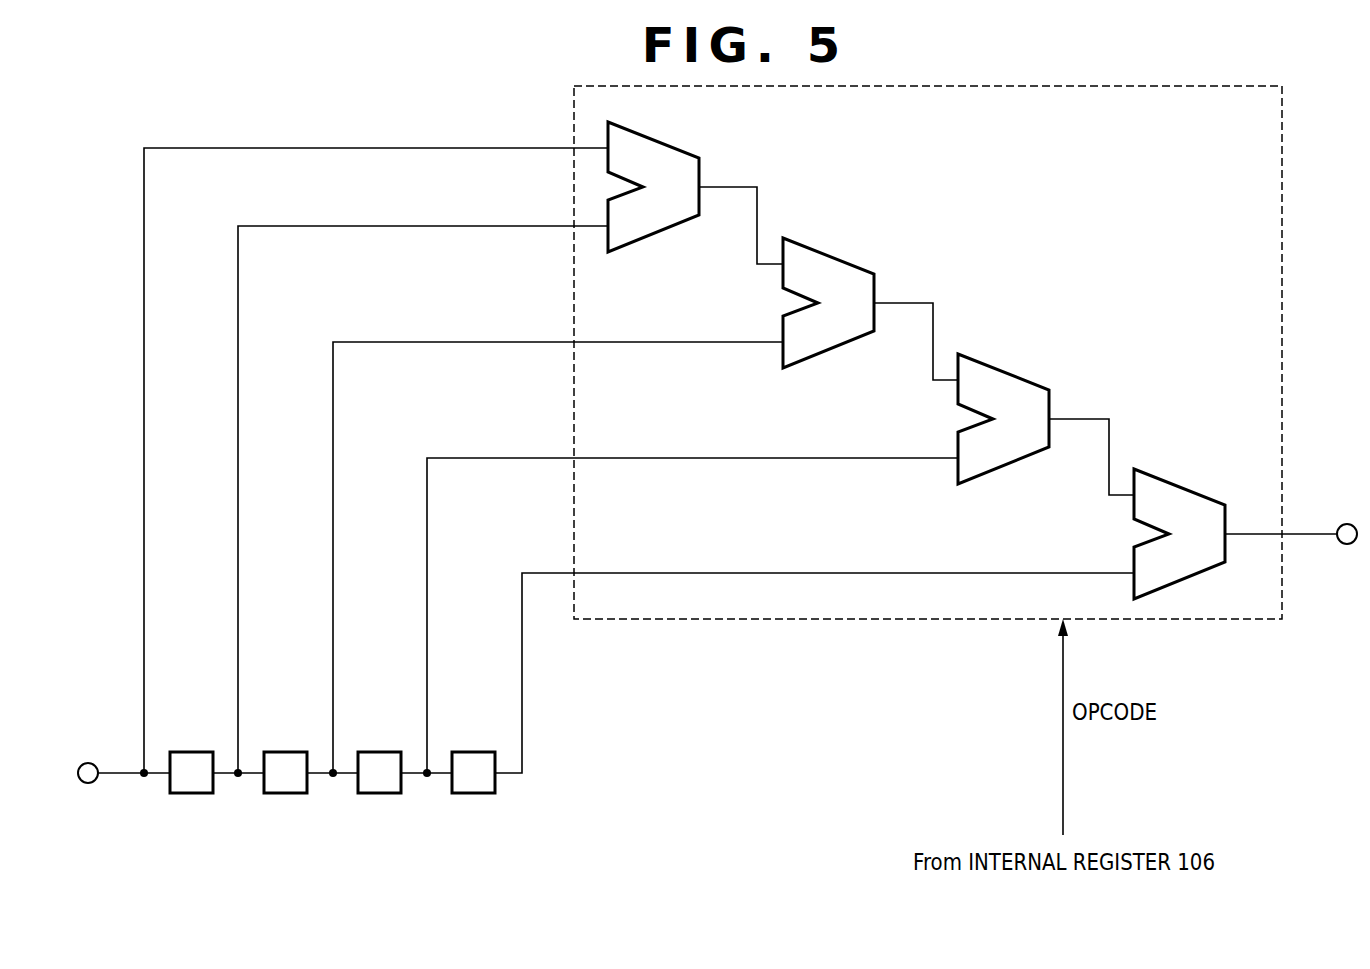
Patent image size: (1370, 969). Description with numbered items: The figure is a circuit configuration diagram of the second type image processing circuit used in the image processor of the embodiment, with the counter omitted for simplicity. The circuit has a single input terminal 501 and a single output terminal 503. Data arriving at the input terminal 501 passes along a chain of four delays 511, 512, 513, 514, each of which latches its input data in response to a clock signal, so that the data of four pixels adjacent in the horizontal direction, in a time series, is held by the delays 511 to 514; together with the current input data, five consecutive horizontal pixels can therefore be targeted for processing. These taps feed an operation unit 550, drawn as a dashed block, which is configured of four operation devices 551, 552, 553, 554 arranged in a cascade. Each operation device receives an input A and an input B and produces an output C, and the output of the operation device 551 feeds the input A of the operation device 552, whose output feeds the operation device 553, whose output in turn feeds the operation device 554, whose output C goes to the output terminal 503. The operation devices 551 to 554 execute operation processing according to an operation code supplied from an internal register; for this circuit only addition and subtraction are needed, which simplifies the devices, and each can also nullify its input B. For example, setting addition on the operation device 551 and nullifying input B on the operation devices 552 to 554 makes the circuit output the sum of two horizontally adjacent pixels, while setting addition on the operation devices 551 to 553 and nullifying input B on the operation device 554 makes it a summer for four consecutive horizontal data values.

The input terminal 501 is at (88, 784).
The output terminal 503 is at (1347, 545).
The delay 511 is at (191, 793).
The delay 512 is at (285, 793).
The delay 513 is at (379, 793).
The delay 514 is at (473, 793).
The operation unit 550 is at (835, 621).
The operation device 551 is at (665, 144).
The operation device 552 is at (840, 260).
The operation device 553 is at (1015, 376).
The operation device 554 is at (1191, 491).